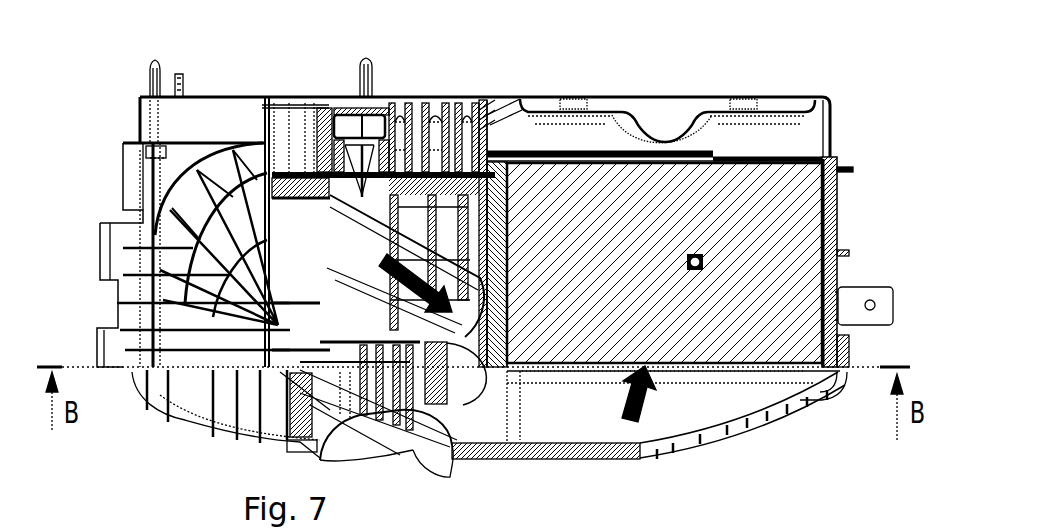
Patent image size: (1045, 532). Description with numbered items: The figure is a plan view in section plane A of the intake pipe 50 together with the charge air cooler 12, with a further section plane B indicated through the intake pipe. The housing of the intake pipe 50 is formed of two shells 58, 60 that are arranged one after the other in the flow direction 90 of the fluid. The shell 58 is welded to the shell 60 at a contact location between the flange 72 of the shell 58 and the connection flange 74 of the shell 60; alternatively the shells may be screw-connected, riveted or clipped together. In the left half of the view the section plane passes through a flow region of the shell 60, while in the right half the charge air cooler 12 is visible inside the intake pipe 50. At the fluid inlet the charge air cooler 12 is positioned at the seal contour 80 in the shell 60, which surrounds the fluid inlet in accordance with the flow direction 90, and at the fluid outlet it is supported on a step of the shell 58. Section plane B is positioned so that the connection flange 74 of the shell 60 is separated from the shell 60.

The intake pipe 50 is at (791, 76).
The charge air cooler 12 is at (793, 222).
The shell 58 is at (145, 163).
The shell 60 is at (233, 420).
The flange 72 is at (856, 348).
The connection flange 74 is at (858, 363).
The seal contour 80 is at (522, 377).
The flow direction 90 is at (383, 262).